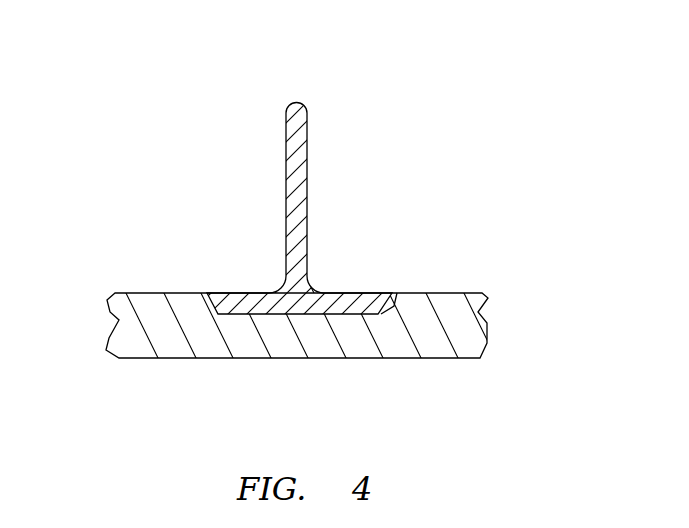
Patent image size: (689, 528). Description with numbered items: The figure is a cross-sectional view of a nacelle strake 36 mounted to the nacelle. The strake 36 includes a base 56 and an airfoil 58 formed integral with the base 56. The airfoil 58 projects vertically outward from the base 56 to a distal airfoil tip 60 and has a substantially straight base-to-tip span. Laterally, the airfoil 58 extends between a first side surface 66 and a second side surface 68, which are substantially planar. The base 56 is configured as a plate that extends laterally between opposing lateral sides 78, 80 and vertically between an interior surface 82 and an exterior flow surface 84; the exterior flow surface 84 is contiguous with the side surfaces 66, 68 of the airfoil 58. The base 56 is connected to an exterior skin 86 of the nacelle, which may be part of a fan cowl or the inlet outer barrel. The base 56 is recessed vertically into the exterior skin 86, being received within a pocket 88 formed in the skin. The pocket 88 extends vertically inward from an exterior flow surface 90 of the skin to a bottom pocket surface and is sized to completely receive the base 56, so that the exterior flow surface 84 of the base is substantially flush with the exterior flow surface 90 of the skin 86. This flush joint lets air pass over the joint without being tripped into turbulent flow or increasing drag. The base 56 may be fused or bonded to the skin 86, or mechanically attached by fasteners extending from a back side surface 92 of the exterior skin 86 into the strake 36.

The strake 36 is at (273, 153).
The base 56 is at (344, 293).
The airfoil 58 is at (308, 143).
The distal airfoil tip 60 is at (297, 102).
The first side surface 66 is at (308, 188).
The second side surface 68 is at (286, 197).
The lateral side 78 is at (392, 303).
The lateral side 80 is at (212, 303).
The interior surface 82 is at (260, 315).
The exterior flow surface 84 is at (272, 290).
The exterior skin 86 is at (442, 358).
The pocket 88 is at (215, 317).
The exterior flow surface 90 is at (127, 292).
The back side surface 92 is at (370, 358).